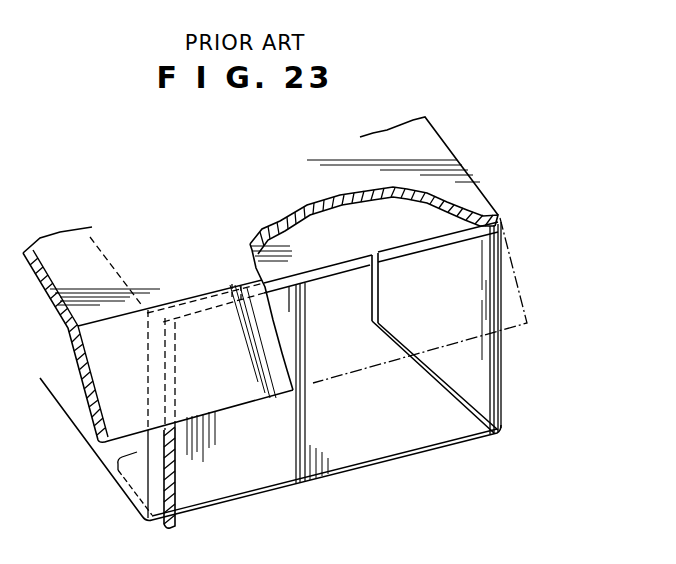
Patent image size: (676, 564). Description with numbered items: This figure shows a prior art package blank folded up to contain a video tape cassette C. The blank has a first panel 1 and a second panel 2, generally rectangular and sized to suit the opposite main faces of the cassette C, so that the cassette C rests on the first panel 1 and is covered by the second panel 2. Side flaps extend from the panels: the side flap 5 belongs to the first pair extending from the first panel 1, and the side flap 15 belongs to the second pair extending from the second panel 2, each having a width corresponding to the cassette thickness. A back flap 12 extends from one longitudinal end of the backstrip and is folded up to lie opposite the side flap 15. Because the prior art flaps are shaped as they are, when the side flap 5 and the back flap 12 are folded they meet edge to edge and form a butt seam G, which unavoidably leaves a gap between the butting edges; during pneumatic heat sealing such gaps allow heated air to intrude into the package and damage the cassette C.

The first panel 1 is at (140, 483).
The second panel 2 is at (440, 157).
The side flap 5 is at (383, 447).
The back flap 12 is at (490, 380).
The side flap 15 is at (242, 387).
The video tape cassette C is at (283, 243).
The butt seam G is at (440, 378).